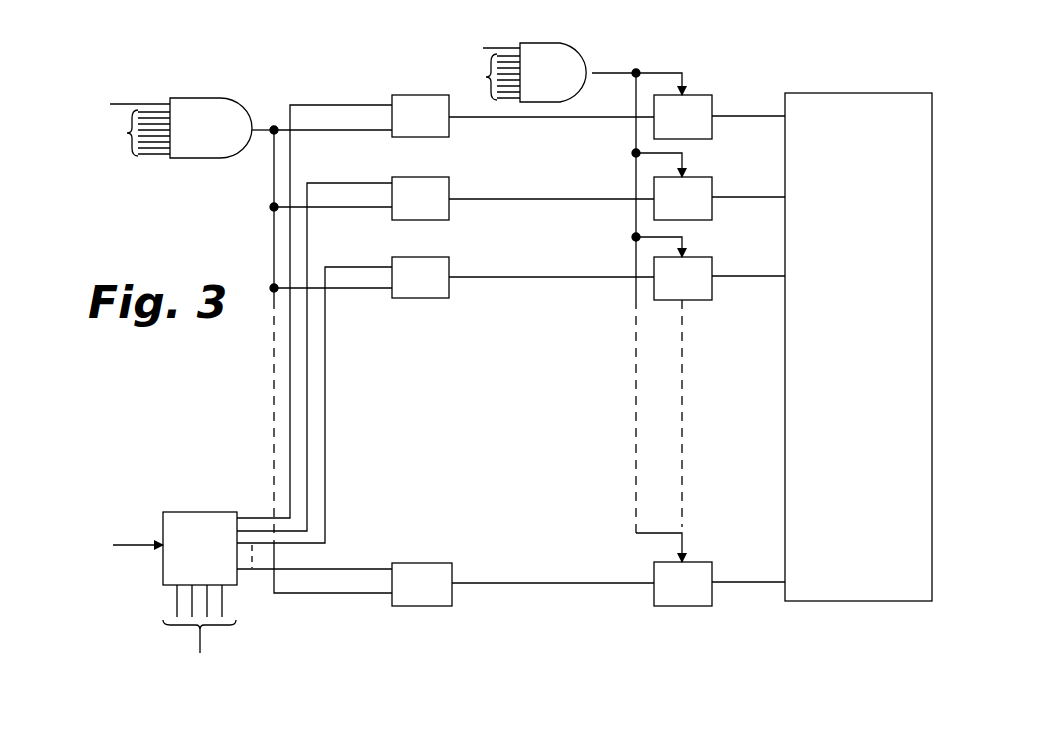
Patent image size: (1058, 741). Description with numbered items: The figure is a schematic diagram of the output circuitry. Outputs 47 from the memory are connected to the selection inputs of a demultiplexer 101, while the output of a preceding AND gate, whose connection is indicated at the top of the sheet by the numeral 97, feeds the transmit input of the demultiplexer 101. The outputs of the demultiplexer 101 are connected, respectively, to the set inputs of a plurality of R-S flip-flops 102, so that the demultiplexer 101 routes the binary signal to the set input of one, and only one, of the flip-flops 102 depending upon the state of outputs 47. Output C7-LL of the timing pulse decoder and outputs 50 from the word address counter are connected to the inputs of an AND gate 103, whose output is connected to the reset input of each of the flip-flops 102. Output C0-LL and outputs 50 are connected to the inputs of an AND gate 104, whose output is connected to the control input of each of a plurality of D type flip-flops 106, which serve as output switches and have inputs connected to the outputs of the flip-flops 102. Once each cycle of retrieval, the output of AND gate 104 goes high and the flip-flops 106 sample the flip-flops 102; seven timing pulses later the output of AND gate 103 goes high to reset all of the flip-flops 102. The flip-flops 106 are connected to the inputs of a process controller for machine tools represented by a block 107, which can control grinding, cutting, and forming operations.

The outputs from memory 47 is at (200, 646).
The outputs from word address counter 50 is at (127, 133).
The element 97 is at (227, 5).
The demultiplexer 101 is at (222, 512).
The R-S flip-flop 102 is at (449, 135).
The AND gate 103 is at (183, 160).
The AND gate 104 is at (585, 53).
The D type flip-flop 106 is at (712, 96).
The process controller for machine tools 107 is at (932, 218).